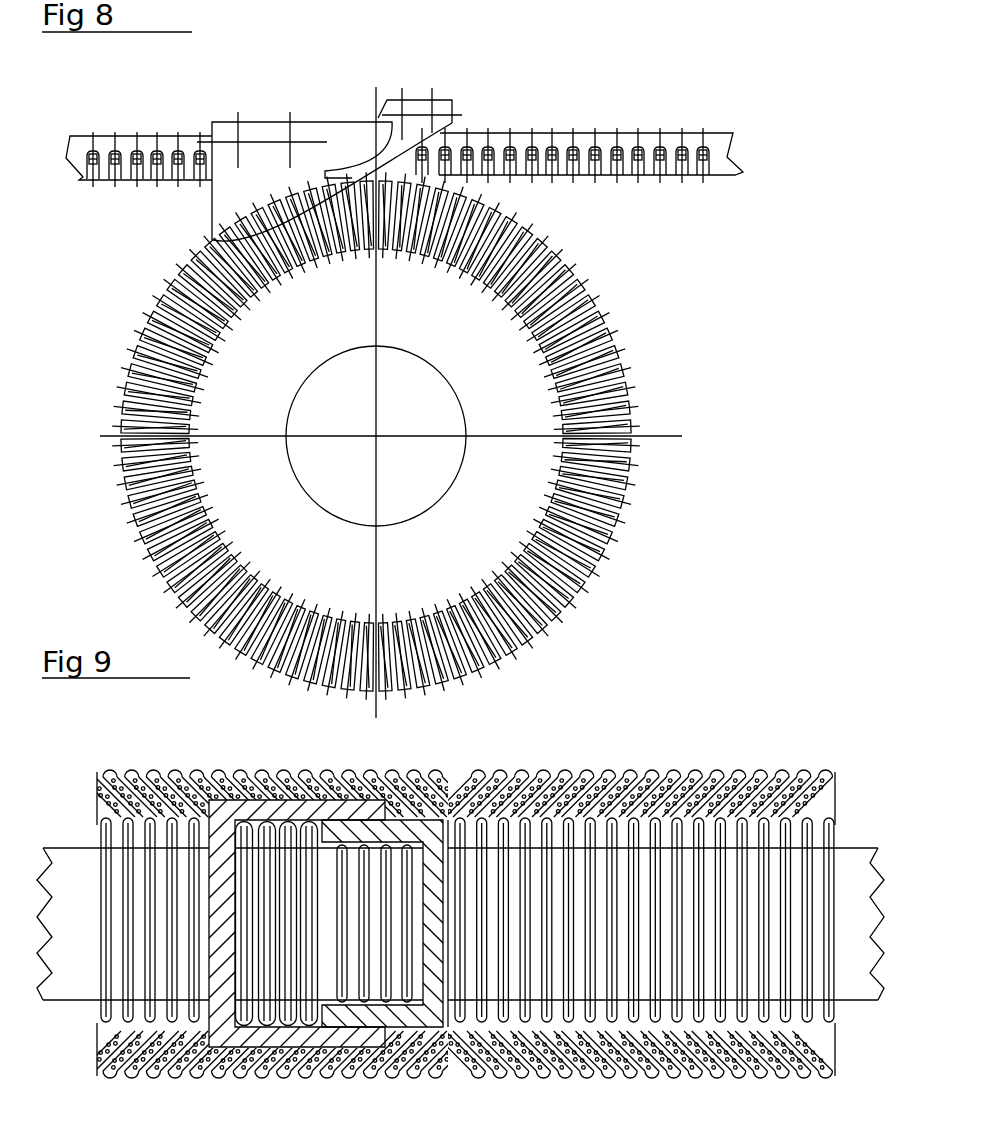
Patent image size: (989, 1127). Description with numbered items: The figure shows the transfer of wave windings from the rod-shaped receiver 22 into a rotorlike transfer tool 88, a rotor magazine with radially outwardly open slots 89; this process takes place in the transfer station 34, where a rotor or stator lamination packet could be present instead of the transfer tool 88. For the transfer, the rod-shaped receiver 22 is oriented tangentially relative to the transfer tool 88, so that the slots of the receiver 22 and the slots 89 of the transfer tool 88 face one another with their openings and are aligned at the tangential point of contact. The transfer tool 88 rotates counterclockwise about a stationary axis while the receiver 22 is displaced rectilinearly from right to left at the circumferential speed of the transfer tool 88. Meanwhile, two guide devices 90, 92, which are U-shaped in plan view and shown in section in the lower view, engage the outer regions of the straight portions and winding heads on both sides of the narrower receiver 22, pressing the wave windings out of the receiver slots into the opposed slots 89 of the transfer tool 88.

In FIG. 8, the rod-shaped receiver 22 is at (722, 147).
In FIG. 9, the rod-shaped receiver 22 is at (857, 848).
In FIG. 8, the transfer station 34 is at (489, 117).
In FIG. 8, the rotorlike transfer tool 88 is at (492, 386).
In FIG. 8, the radially outwardly open slots 89 is at (597, 288).
In FIG. 8, the guide device 90 is at (418, 105).
In FIG. 9, the guide device 90 is at (438, 826).
In FIG. 8, the guide device 92 is at (273, 127).
In FIG. 9, the guide device 92 is at (255, 810).